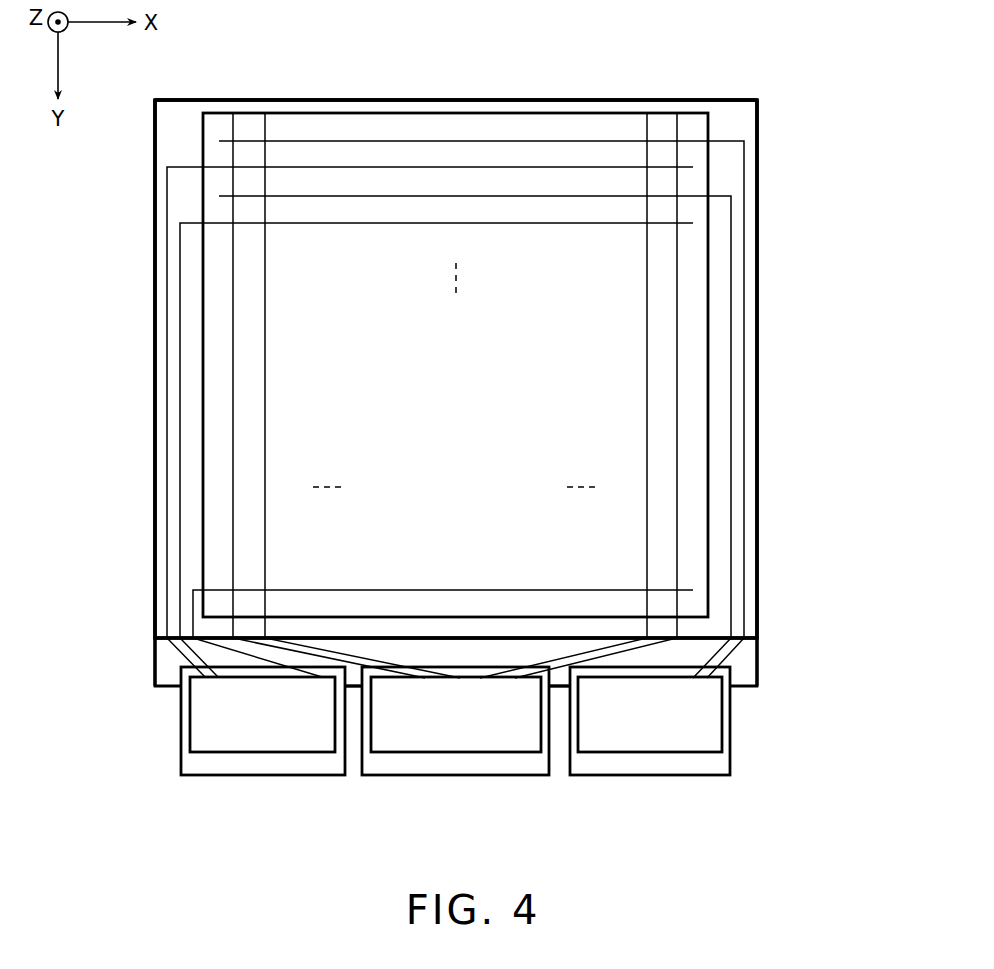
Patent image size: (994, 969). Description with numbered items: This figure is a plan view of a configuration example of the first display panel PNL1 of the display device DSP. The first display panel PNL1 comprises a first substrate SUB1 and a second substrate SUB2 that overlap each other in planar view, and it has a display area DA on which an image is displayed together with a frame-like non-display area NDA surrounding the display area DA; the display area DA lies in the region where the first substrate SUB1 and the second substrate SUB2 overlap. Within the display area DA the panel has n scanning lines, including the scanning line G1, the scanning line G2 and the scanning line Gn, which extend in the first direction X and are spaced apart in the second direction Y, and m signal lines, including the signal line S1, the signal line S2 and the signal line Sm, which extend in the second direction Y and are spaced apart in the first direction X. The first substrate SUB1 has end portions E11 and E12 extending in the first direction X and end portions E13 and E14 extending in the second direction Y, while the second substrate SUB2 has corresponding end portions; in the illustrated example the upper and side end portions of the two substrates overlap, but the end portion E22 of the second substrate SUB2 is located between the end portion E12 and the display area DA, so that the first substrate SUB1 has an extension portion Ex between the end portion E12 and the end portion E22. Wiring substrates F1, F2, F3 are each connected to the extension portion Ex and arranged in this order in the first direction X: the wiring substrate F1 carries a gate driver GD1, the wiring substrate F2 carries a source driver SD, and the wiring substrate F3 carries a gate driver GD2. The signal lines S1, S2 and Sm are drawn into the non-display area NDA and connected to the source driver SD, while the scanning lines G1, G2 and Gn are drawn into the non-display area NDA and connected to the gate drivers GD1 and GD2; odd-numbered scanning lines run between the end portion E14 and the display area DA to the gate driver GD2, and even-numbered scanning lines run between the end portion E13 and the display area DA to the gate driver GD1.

The signal line S1 is at (234, 132).
The signal line S2 is at (266, 132).
The signal line Sm is at (678, 130).
The scanning line G1 is at (340, 143).
The scanning line G2 is at (389, 169).
The scanning line Gn is at (428, 589).
The end portion E11 is at (583, 99).
The end portion E12 is at (347, 688).
The end portion E22 is at (563, 639).
The end portion E13 is at (154, 403).
The end portion E14 is at (758, 388).
The first display panel PNL1 is at (757, 99).
The display device DSP is at (812, 114).
The display area DA is at (697, 324).
The non-display area NDA is at (716, 605).
The extension portion Ex is at (742, 663).
The first substrate SUB1 is at (163, 663).
The second substrate SUB2 is at (156, 609).
The wiring substrate F1 is at (181, 703).
The wiring substrate F2 is at (490, 777).
The wiring substrate F3 is at (731, 703).
The gate driver GD1 is at (190, 740).
The gate driver GD2 is at (723, 741).
The source driver SD is at (417, 753).